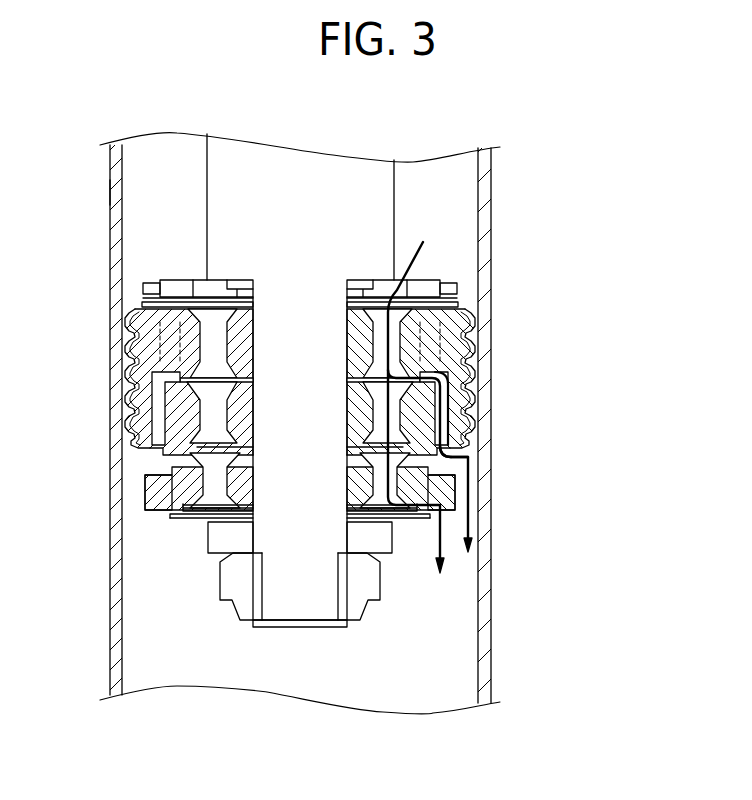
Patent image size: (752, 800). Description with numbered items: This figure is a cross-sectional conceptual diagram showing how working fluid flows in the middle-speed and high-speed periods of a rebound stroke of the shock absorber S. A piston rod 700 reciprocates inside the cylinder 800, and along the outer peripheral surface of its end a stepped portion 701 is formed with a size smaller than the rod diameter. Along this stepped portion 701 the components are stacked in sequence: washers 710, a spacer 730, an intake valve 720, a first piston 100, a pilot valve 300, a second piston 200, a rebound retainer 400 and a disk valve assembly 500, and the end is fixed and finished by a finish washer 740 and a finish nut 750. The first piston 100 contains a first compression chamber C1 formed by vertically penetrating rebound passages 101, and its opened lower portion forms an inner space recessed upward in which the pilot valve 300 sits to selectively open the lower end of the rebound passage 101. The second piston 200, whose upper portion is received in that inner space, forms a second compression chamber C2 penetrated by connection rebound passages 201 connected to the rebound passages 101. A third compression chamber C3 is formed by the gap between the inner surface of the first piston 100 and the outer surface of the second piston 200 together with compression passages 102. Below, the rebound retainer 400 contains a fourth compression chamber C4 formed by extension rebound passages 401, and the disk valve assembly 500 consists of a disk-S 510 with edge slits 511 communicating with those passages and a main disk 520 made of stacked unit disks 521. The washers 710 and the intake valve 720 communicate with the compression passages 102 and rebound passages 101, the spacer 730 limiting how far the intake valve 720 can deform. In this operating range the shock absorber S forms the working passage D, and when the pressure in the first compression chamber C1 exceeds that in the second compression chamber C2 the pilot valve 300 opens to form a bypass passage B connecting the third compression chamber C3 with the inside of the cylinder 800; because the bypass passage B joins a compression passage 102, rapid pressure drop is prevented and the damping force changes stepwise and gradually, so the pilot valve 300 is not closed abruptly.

The piston rod 700 is at (317, 206).
The stepped portion 701 is at (273, 630).
The spacer 730 is at (237, 298).
The washer 710 is at (143, 289).
The intake valve 720 is at (142, 305).
The cylinder 800 is at (487, 226).
The first piston 100 is at (140, 384).
The compression passage 102 is at (128, 328).
The rebound passage 101 is at (133, 357).
The first compression chamber C1 is at (175, 348).
The second compression chamber C2 is at (455, 435).
The third compression chamber C3 is at (455, 412).
The fourth compression chamber C4 is at (450, 465).
The pilot valve 300 is at (155, 395).
The second piston 200 is at (158, 420).
The connection rebound passage 201 is at (175, 452).
The rebound retainer 400 is at (150, 493).
The extension rebound passage 401 is at (178, 488).
The finish washer 740 is at (212, 533).
The finish nut 750 is at (230, 590).
The disk valve assembly 500 is at (397, 525).
The disk-S 510 is at (410, 498).
The slit 511 is at (412, 507).
The main disk 520 is at (374, 536).
The unit disk 521 is at (410, 516).
The bypass passage B is at (431, 408).
The working passage D is at (418, 482).
The shock absorber S is at (100, 191).